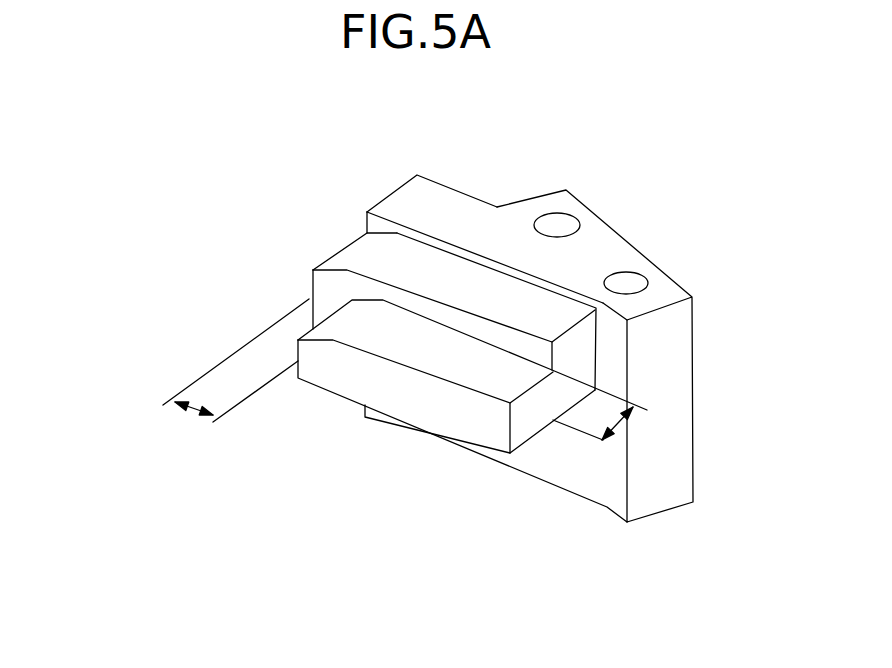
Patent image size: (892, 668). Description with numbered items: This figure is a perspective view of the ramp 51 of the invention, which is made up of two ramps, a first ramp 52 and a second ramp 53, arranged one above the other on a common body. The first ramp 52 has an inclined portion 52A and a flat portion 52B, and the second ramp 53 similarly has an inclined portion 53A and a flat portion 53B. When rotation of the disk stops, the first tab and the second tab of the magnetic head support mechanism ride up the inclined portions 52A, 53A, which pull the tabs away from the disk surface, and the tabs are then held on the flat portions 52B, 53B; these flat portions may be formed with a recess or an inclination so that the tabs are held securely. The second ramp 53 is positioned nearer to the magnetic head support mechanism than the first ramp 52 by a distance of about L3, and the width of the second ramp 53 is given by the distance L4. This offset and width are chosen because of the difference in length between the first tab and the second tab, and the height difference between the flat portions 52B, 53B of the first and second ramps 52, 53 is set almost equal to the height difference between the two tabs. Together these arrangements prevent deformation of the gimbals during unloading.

The ramp 51 is at (603, 257).
The first ramp 52 is at (384, 239).
The inclined portion 52A is at (367, 240).
The flat portion 52B is at (383, 268).
The second ramp 53 is at (380, 307).
The inclined portion 53A is at (343, 320).
The flat portion 53B is at (377, 340).
The distance L3 is at (198, 410).
The width of the second ramp L4 is at (633, 433).